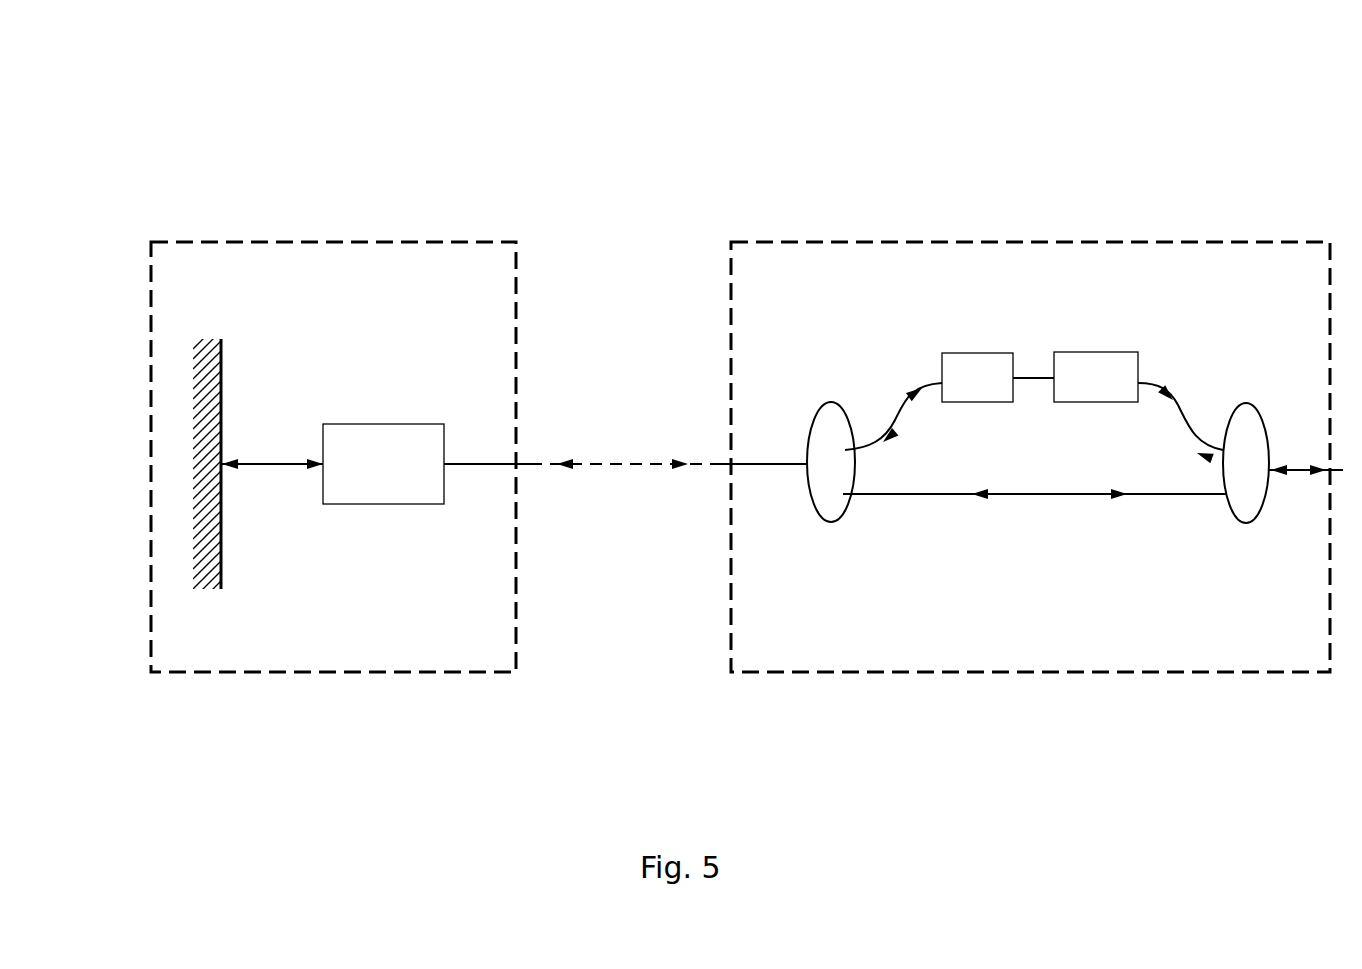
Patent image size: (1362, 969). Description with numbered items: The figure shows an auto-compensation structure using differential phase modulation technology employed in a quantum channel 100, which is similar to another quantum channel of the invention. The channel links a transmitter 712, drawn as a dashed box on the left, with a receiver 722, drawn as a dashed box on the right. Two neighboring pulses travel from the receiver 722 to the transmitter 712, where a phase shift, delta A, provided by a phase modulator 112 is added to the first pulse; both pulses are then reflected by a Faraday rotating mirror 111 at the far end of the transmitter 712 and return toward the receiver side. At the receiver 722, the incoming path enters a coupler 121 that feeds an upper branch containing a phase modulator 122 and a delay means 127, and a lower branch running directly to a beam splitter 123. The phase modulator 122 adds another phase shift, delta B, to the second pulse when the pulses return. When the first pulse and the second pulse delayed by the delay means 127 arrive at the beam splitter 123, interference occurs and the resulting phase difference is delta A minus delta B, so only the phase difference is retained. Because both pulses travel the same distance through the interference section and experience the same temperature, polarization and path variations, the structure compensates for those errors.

The quantum channel 100 is at (282, 57).
The transmitter 712 is at (452, 240).
The receiver 722 is at (1100, 237).
The Faraday rotating mirror 111 is at (222, 548).
The phase modulator 112 is at (424, 504).
The first coupler 121 is at (831, 400).
The phase modulator 122 is at (988, 352).
The delay means 127 is at (1103, 352).
The beam splitter 123 is at (1247, 400).